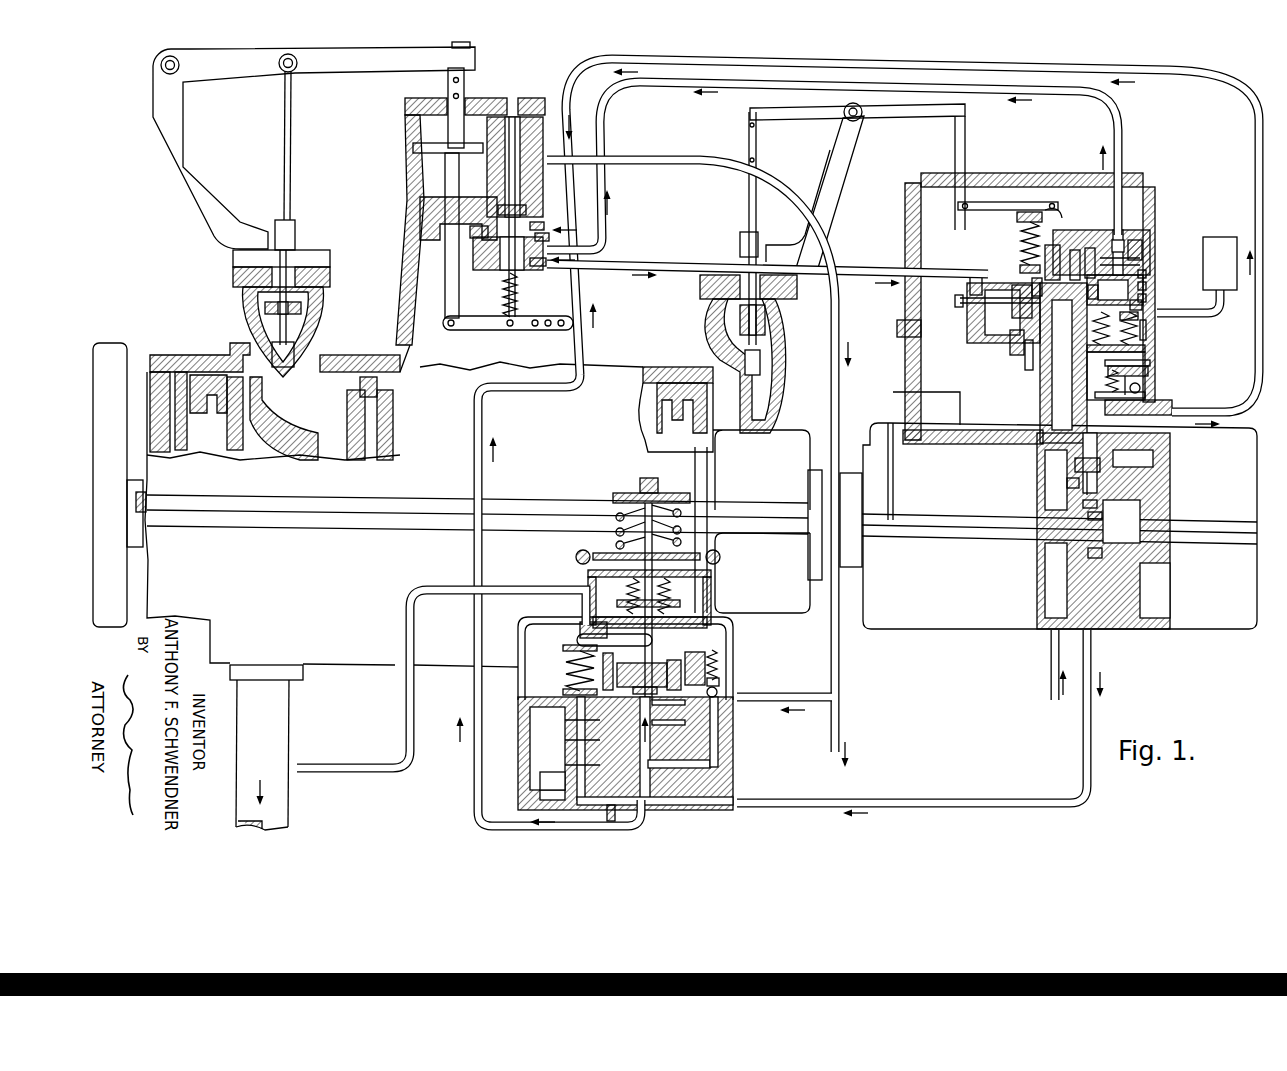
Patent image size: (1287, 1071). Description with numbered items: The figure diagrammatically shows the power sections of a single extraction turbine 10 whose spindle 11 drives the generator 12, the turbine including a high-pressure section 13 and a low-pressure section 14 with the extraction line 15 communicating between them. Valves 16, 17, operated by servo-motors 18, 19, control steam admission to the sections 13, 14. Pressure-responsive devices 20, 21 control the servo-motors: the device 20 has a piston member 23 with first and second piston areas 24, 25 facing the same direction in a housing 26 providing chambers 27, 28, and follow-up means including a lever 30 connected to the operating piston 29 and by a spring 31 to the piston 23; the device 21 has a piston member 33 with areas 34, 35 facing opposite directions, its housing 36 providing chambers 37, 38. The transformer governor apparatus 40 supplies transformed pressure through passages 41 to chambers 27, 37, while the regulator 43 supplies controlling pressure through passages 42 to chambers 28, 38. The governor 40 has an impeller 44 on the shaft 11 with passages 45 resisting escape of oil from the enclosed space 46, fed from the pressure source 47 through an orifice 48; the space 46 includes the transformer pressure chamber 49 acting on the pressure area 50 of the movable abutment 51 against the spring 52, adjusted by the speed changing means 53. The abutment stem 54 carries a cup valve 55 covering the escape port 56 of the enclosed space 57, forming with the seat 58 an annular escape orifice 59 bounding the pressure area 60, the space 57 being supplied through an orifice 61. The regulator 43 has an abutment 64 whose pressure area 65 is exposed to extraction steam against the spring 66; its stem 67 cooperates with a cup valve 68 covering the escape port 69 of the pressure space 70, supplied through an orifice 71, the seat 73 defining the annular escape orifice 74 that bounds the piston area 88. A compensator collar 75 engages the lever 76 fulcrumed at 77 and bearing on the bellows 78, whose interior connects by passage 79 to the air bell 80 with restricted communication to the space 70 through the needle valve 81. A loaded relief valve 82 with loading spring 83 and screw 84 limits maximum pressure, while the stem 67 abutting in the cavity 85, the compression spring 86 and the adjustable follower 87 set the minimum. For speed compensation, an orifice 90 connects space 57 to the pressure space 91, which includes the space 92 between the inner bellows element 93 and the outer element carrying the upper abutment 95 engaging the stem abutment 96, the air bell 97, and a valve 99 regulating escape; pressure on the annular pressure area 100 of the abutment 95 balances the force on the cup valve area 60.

The turbine 10 is at (372, 337).
The spindle 11 is at (200, 463).
The generator 12 is at (108, 358).
The high-pressure section 13 is at (665, 380).
The low-pressure section 14 is at (186, 385).
The extraction line 15 is at (288, 717).
The valve 16 is at (770, 345).
The valve 17 is at (294, 330).
The servo-motor 18 is at (900, 316).
The servo-motor 19 is at (398, 176).
The pressure-responsive device 20 is at (1011, 261).
The pressure-responsive device 21 is at (550, 300).
The piston member 23 is at (1008, 338).
The first piston area 24 is at (1052, 245).
The second piston area 25 is at (1022, 250).
The housing 26 is at (960, 285).
The pressure chamber 27 is at (977, 273).
The pressure chamber 28 is at (1038, 276).
The operating piston 29 is at (918, 382).
The lever 30 is at (1003, 211).
The spring 31 is at (1050, 213).
The piston member 33 is at (496, 210).
The first piston area 34 is at (497, 262).
The second piston area 35 is at (537, 222).
The housing 36 is at (474, 238).
The pressure chamber 37 is at (547, 263).
The pressure chamber 38 is at (549, 233).
The transformer governor apparatus 40 is at (1245, 332).
The passages 41 is at (598, 250).
The passages 42 is at (466, 823).
The regulator 43 is at (770, 757).
The impeller 44 is at (1102, 516).
The passages 45 is at (1102, 553).
The enclosed space 46 is at (1097, 503).
The pressure source 47 is at (1066, 481).
The orifice 48 is at (1140, 455).
The transformer pressure chamber 49 is at (1142, 388).
The pressure area 50 is at (1150, 366).
The movable abutment 51 is at (1150, 358).
The spring 52 is at (1150, 397).
The speed changing means 53 is at (1150, 377).
The stem 54 is at (1140, 340).
The cup valve member 55 is at (1091, 288).
The escape port 56 is at (1140, 245).
The enclosed space 57 is at (1122, 240).
The seat 58 is at (1141, 266).
The annular escape orifice 59 is at (1140, 258).
The pressure area 60 is at (1092, 248).
The orifice 61 is at (1078, 250).
The abutment 64 is at (680, 595).
The pressure area 65 is at (672, 598).
The spring 66 is at (625, 513).
The stem 67 is at (632, 592).
The cup valve member 68 is at (674, 665).
The escape port 69 is at (660, 703).
The pressure space 70 is at (660, 723).
The orifice 71 is at (738, 792).
The seat 73 is at (640, 700).
The annular escape orifice 74 is at (575, 688).
The collar 75 is at (655, 655).
The lever 76 is at (630, 634).
The fulcrum 77 is at (583, 622).
The bellows 78 is at (565, 648).
The passage 79 is at (585, 762).
The air bell 80 is at (530, 775).
The needle valve 81 is at (606, 815).
The loaded relief valve 82 is at (718, 690).
The loading spring 83 is at (720, 675).
The screw 84 is at (720, 656).
The cavity 85 is at (652, 675).
The compression spring 86 is at (570, 665).
The adjustable follower 87 is at (706, 655).
The piston area 88 is at (643, 705).
The orifice 90 is at (1147, 273).
The pressure space 91 is at (1147, 296).
The space 92 is at (1150, 330).
The inner bellows element 93 is at (1140, 318).
The upper abutment 95 is at (1222, 302).
The stem abutment 96 is at (1144, 305).
The air bell 97 is at (1222, 240).
The valve 99 is at (1147, 284).
The annular pressure area 100 is at (1022, 352).